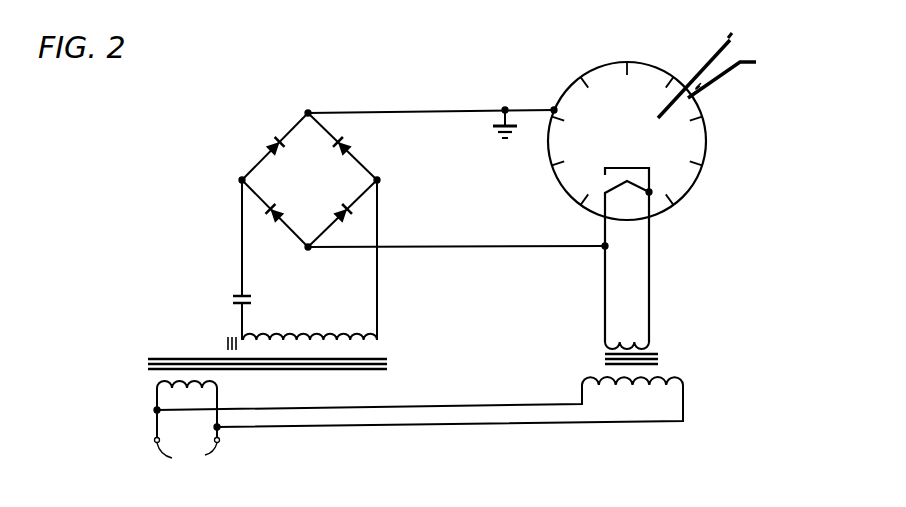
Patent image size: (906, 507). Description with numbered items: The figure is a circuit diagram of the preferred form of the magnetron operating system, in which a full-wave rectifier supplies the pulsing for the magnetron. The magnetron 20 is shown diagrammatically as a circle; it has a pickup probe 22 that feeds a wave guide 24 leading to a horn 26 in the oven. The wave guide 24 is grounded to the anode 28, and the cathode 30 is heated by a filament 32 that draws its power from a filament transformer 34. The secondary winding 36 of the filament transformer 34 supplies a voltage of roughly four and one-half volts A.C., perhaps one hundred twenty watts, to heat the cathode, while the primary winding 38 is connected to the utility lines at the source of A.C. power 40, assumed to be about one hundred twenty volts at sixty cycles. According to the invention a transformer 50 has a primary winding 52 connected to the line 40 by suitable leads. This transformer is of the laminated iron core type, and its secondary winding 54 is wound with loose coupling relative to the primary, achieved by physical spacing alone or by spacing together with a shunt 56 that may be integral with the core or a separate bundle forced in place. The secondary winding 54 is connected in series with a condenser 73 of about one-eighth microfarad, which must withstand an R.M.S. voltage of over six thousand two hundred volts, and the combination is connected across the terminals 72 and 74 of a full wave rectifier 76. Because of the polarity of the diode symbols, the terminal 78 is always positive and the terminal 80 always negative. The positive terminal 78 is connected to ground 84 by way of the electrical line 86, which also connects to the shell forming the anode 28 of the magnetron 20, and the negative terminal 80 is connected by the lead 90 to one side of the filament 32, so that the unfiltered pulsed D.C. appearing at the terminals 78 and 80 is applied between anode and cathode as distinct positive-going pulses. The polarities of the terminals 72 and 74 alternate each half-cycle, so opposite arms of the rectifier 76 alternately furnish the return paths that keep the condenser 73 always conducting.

The magnetron 20 is at (573, 70).
The pickup probe 22 is at (656, 118).
The wave guide 24 is at (712, 58).
The horn 26 is at (729, 34).
The anode 28 is at (705, 137).
The cathode 30 is at (632, 163).
The filament 32 is at (655, 158).
The filament transformer 34 is at (668, 356).
The secondary winding 36 is at (630, 338).
The primary winding 38 is at (640, 382).
The source of A.C. power 40 is at (187, 457).
The transformer 50 is at (389, 377).
The primary winding 52 is at (157, 403).
The secondary winding 54 is at (343, 338).
The shunt 56 is at (228, 346).
The terminal 72 is at (240, 180).
The condenser 73 is at (239, 298).
The terminal 74 is at (379, 180).
The full wave rectifier 76 is at (253, 142).
The positive terminal 78 is at (305, 112).
The negative terminal 80 is at (319, 266).
The ground 84 is at (500, 117).
The electrical line 86 is at (424, 110).
The lead 90 is at (505, 246).